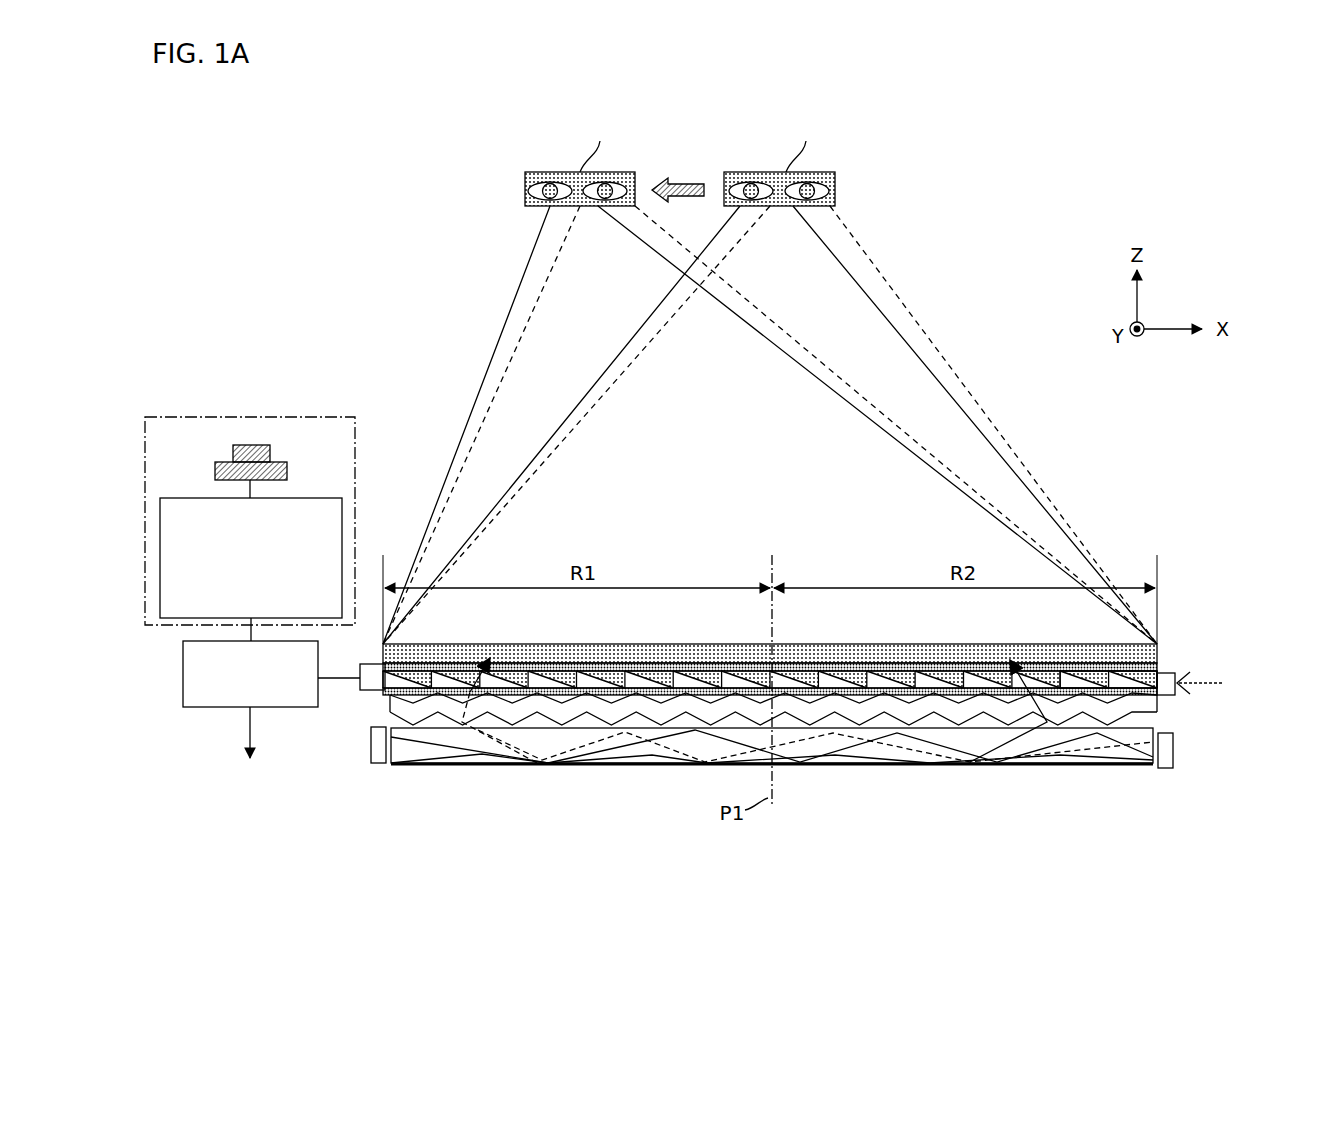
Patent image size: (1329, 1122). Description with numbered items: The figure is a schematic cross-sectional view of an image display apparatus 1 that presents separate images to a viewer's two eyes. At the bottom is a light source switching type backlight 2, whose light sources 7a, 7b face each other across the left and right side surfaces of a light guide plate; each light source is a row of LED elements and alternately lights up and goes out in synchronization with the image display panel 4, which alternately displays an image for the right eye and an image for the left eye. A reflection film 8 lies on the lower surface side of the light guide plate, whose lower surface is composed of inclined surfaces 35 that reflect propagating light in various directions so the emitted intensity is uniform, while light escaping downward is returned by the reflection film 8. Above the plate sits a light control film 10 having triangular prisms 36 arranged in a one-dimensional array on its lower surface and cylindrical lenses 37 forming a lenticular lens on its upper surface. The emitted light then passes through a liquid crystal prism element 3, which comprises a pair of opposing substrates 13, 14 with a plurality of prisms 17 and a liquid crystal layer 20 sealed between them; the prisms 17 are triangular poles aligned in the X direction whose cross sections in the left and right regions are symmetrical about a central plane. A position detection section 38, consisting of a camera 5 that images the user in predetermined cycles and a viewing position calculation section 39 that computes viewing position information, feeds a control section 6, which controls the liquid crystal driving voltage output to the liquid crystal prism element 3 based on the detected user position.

The image display apparatus 1 is at (335, 253).
The light source switching type backlight 2 is at (789, 761).
The liquid crystal prism element 3 is at (752, 672).
The image display panel 4 is at (1160, 650).
The camera 5 is at (287, 462).
The control section 6 is at (285, 707).
The light source 7a is at (378, 764).
The light source 7b is at (1175, 775).
The reflection film 8 is at (815, 767).
The light control film 10 is at (1108, 765).
The opposing substrate 13 is at (580, 663).
The opposing substrate 14 is at (612, 678).
The prism 17 is at (1082, 675).
The liquid crystal layer 20 is at (1033, 678).
The inclined surface 35 is at (773, 761).
The prism 36 is at (577, 722).
The cylindrical lens 37 is at (518, 703).
The position detection section 38 is at (255, 417).
The viewing position calculation section 39 is at (312, 498).